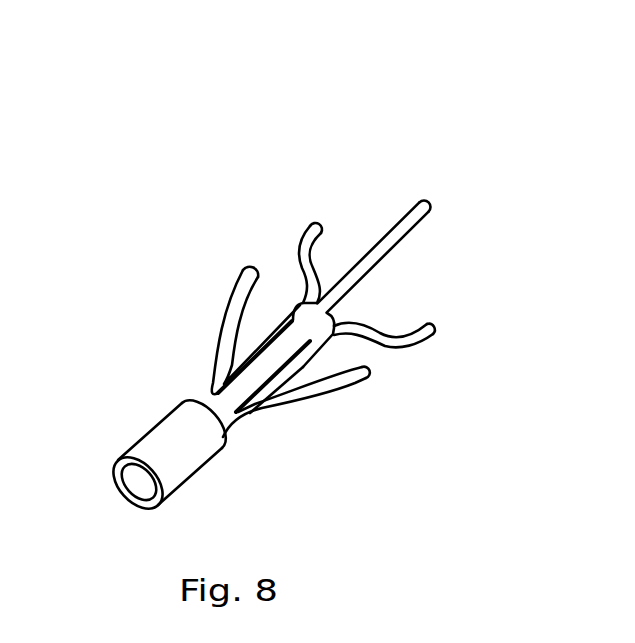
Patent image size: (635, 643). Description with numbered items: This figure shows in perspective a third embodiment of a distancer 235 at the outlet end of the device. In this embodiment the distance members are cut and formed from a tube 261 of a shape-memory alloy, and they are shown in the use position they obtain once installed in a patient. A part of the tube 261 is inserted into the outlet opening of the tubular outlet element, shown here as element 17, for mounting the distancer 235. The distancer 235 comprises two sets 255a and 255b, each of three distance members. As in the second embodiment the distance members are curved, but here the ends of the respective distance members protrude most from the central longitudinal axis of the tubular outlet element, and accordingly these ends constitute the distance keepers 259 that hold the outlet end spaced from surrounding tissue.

The catheter / delivery tube 17 is at (147, 447).
The distancer 235 is at (350, 240).
The first set of distance members 255a is at (437, 270).
The second set of distance members 255b is at (310, 422).
The distance keepers 259 is at (368, 344).
The tube 261 is at (210, 395).